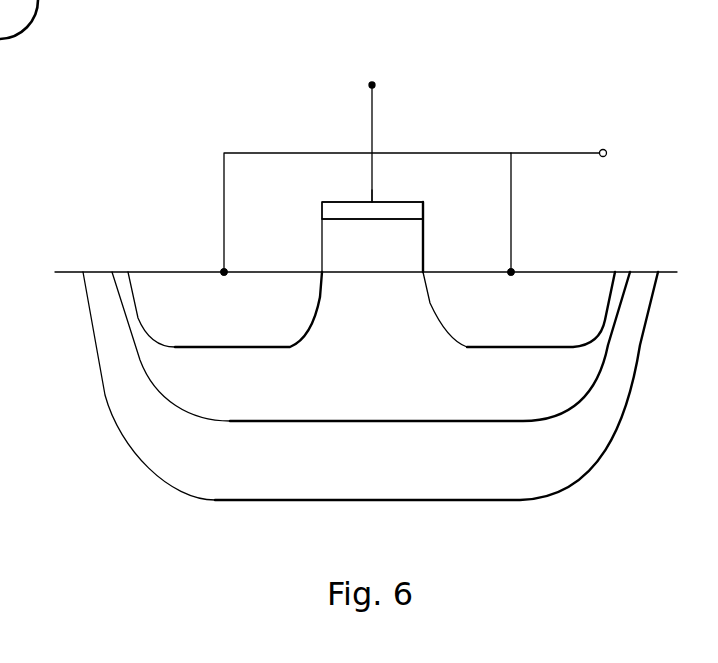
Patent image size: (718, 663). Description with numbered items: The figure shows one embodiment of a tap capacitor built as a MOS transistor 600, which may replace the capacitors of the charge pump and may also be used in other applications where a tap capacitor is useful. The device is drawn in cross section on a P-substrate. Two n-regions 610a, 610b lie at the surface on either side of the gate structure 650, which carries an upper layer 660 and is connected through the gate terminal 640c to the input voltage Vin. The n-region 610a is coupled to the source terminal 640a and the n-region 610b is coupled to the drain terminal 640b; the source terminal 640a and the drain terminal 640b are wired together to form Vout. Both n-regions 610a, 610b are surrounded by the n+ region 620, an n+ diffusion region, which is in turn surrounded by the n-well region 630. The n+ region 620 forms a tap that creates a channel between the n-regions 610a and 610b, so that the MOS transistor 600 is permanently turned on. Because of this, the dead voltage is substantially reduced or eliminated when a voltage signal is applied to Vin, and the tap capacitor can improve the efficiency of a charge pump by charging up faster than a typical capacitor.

The MOS transistor 600 is at (621, 77).
The n-region 610a is at (251, 337).
The n-region 610b is at (539, 337).
The n+ region 620 is at (519, 410).
The n-well region 630 is at (519, 488).
The source terminal 640a is at (222, 268).
The drain terminal 640b is at (513, 270).
The gate contact 640c is at (368, 200).
The gate 650 is at (396, 255).
The gate electrode layer 660 is at (413, 208).